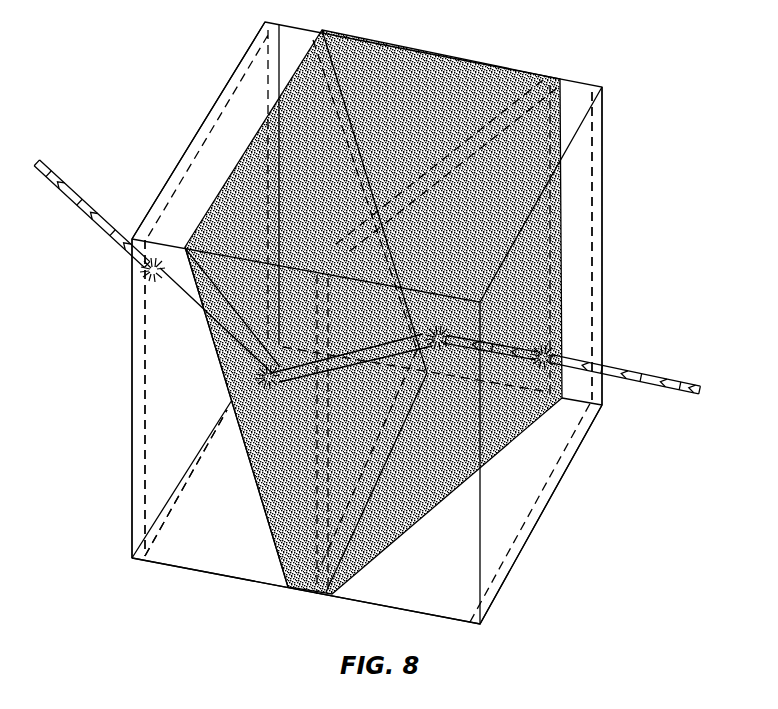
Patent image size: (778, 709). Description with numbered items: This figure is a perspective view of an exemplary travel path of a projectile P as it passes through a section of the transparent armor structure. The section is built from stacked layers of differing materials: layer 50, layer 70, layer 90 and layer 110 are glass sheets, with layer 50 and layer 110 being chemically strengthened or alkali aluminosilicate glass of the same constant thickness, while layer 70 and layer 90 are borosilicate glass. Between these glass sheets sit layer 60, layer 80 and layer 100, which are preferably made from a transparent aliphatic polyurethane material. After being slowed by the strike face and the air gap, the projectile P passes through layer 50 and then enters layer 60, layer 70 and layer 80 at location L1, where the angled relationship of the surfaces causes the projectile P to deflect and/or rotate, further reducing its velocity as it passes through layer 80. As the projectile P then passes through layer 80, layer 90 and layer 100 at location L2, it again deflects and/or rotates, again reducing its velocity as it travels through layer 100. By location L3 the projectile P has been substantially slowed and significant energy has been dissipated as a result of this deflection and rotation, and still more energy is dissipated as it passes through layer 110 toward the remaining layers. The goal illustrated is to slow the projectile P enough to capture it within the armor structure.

The layer 70 is at (560, 94).
The layer 50 is at (593, 217).
The projectile P is at (560, 350).
The layer 110 is at (131, 397).
The layer 100 is at (170, 452).
The layer 90 is at (258, 510).
The layer 80 is at (305, 548).
The layer 60 is at (433, 593).
The location L1 is at (440, 310).
The location L2 is at (283, 348).
The location L3 is at (159, 237).